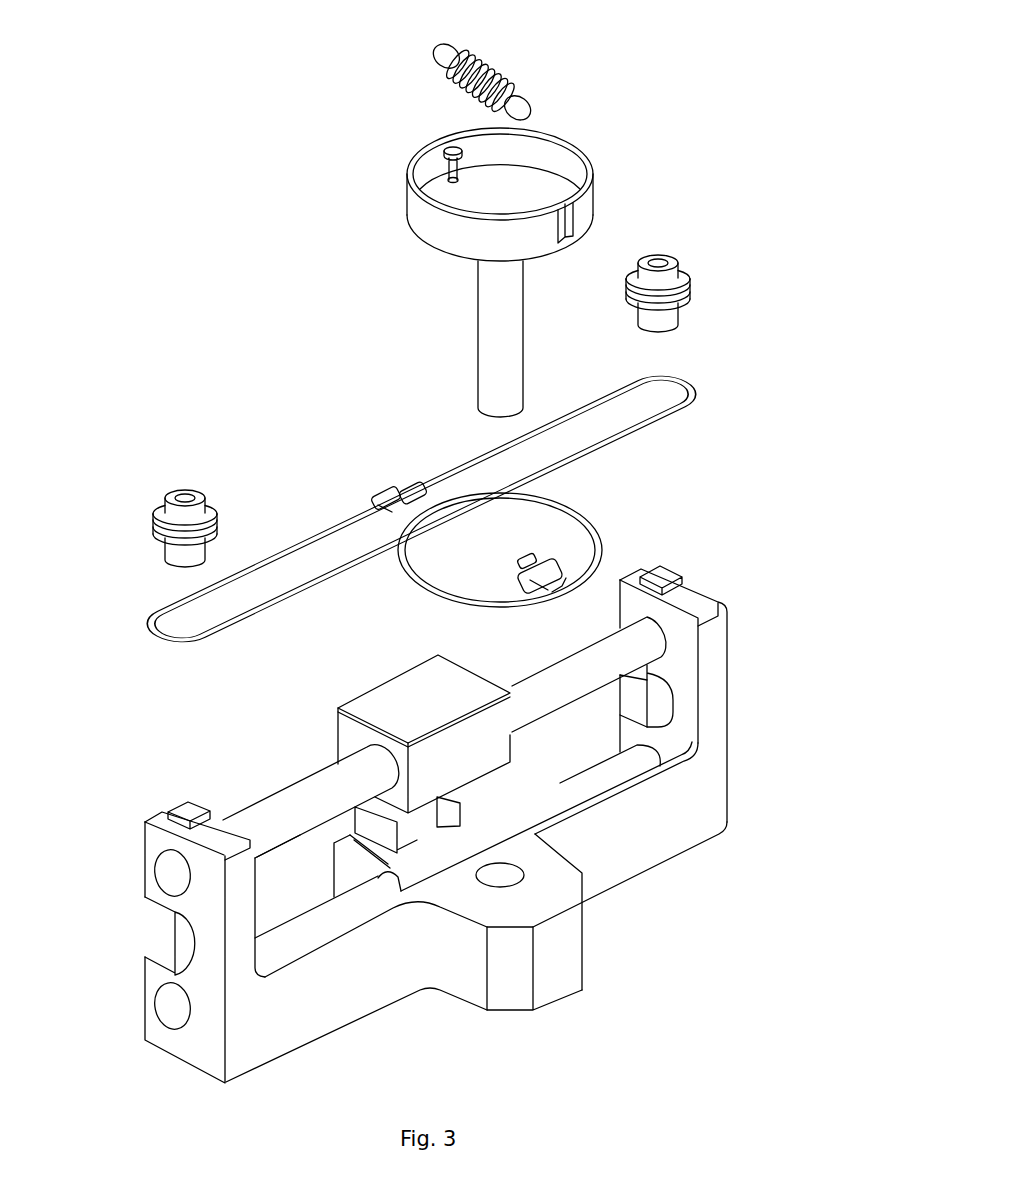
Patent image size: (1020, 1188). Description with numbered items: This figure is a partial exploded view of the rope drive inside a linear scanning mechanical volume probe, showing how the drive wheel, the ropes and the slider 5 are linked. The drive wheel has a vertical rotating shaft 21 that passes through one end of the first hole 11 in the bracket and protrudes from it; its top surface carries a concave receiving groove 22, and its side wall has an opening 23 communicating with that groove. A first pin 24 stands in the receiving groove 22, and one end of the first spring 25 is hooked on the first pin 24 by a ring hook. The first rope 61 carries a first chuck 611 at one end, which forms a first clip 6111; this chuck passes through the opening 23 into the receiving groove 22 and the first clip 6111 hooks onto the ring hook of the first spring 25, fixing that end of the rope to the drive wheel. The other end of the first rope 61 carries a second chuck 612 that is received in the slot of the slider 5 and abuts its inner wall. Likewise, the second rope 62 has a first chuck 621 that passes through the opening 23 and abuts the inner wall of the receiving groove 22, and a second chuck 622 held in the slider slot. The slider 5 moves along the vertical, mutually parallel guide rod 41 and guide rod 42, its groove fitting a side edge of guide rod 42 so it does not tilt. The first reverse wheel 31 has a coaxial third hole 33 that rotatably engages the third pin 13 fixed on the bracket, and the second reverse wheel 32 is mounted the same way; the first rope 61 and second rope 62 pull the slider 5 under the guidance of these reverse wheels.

The slider 5 is at (485, 745).
The first hole 11 is at (512, 880).
The third pin 13 is at (185, 928).
The rotating shaft 21 is at (497, 312).
The receiving groove 22 is at (550, 160).
The opening 23 is at (573, 222).
The first pin 24 is at (444, 150).
The first spring 25 is at (505, 56).
The first reverse wheel 31 is at (160, 515).
The second reverse wheel 32 is at (690, 292).
The third hole 33 is at (668, 262).
The guide rod 41 is at (643, 630).
The guide rod 42 is at (602, 783).
The first rope 61 is at (165, 602).
The first chuck 611 is at (545, 572).
The first clip 6111 is at (530, 560).
The second chuck 612 is at (385, 488).
The second rope 62 is at (680, 387).
The first chuck 621 is at (560, 587).
The second chuck 622 is at (405, 490).